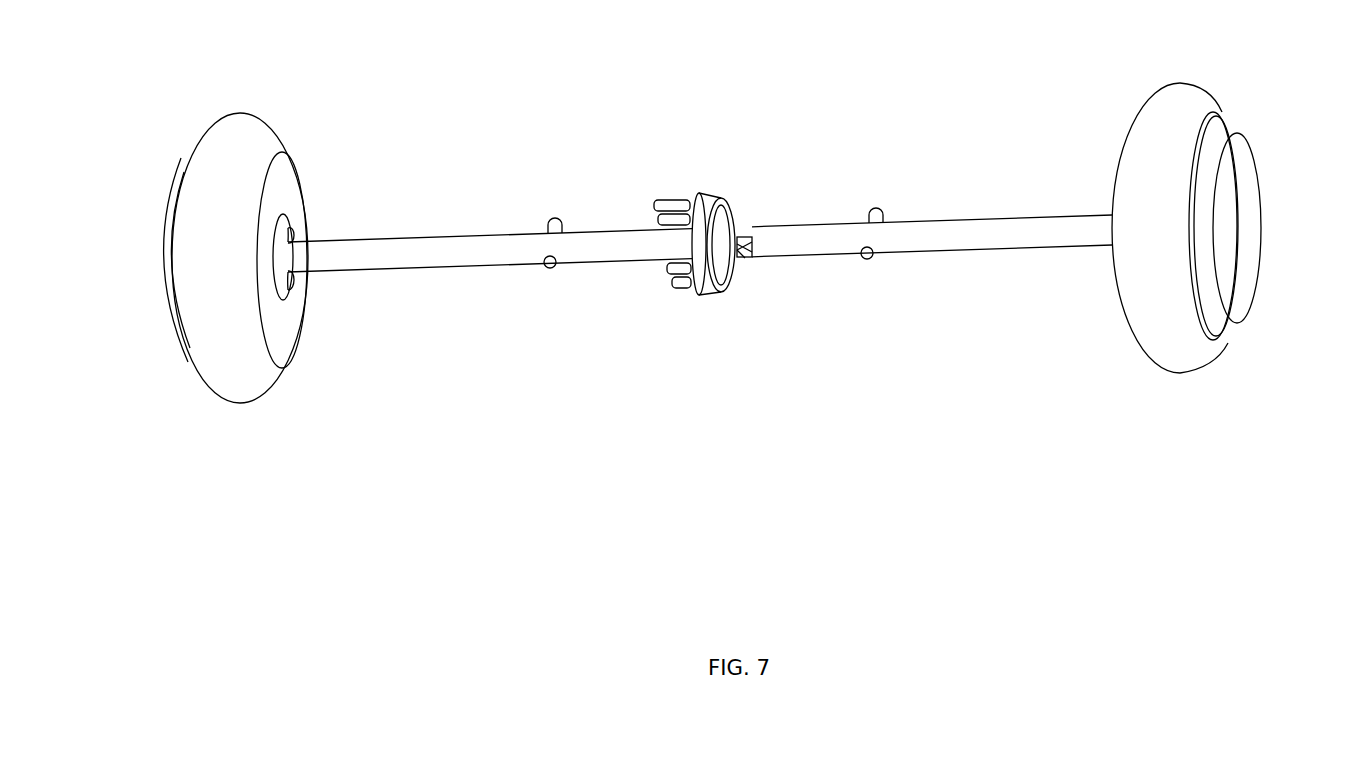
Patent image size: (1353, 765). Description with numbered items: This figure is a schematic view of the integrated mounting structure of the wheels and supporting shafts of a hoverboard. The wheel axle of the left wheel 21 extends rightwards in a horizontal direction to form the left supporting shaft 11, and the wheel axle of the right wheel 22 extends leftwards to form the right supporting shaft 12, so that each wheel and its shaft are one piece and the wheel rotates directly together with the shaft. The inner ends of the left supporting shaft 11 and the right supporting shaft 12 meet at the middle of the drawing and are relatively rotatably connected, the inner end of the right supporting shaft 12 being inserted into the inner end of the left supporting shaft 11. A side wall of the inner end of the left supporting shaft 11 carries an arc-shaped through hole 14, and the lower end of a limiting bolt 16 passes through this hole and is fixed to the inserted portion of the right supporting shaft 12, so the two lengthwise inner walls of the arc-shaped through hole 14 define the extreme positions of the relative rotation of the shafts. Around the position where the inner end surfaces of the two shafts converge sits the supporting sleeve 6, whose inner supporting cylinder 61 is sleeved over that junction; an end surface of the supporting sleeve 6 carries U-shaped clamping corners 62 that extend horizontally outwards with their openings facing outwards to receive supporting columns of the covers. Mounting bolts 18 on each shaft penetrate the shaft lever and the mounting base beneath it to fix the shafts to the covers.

The supporting sleeve 6 is at (754, 182).
The inner supporting cylinder 61 is at (689, 205).
The U-shaped clamping corner 62 is at (722, 220).
The left supporting shaft 11 is at (1008, 244).
The right supporting shaft 12 is at (433, 262).
The arc-shaped through hole 14 is at (760, 228).
The limiting bolt 16 is at (750, 258).
The mounting bolt 18 is at (536, 284).
The left wheel 21 is at (1224, 300).
The right wheel 22 is at (194, 293).